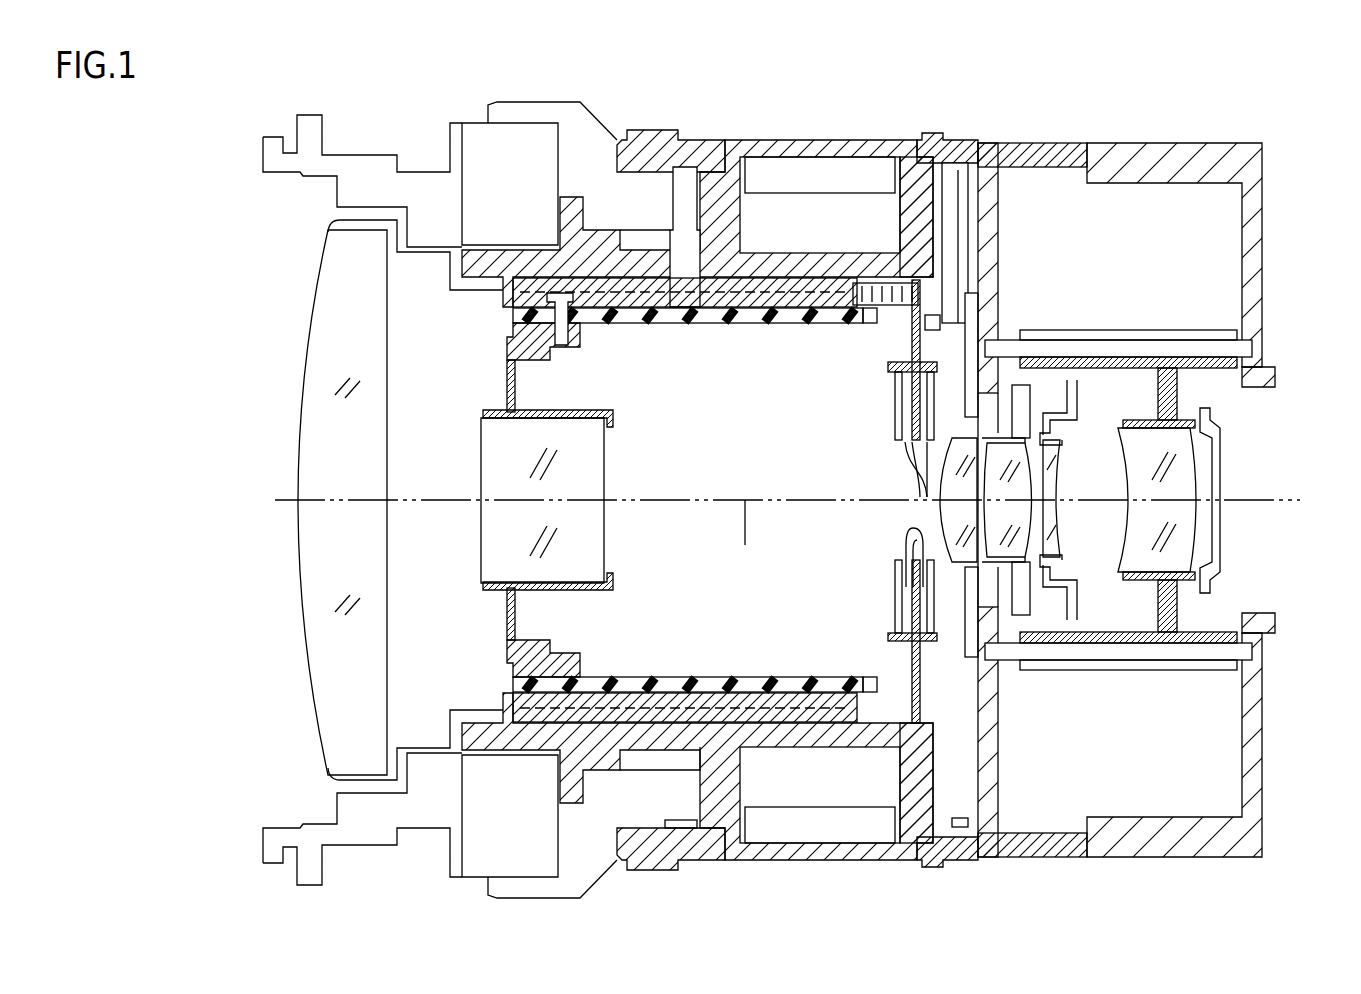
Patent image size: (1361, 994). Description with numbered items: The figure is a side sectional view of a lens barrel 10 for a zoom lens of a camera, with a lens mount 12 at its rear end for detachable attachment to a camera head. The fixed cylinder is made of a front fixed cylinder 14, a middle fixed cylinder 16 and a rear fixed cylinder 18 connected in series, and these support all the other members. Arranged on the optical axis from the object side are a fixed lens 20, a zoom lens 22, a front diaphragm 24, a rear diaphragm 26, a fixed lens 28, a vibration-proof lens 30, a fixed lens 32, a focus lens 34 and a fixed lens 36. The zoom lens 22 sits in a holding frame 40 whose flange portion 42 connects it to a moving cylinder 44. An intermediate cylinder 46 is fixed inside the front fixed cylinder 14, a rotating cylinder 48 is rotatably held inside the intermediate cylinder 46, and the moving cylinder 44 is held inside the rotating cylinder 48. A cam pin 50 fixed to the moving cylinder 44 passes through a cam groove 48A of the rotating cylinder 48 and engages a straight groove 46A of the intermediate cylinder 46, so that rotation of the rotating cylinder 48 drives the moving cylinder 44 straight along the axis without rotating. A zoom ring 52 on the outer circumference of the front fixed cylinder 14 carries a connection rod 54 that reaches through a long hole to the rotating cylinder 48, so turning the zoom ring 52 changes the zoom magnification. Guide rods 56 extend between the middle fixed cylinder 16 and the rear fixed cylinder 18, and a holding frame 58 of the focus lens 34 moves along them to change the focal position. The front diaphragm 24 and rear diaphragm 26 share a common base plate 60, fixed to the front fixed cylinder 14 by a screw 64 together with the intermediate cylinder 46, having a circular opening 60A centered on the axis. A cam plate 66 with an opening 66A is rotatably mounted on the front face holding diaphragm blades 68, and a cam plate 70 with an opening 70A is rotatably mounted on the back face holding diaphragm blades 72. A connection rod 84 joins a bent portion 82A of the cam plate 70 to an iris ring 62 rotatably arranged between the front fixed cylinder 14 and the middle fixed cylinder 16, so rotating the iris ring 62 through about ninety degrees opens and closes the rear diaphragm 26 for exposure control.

The lens barrel 10 is at (246, 78).
The lens mount 12 is at (1268, 374).
The front fixed cylinder 14 is at (776, 146).
The middle fixed cylinder 16 is at (1016, 150).
The rear fixed cylinder 18 is at (1186, 160).
The fixed lens 20 is at (322, 350).
The zoom lens 22 is at (490, 443).
The front diaphragm 24 is at (895, 448).
The rear diaphragm 26 is at (915, 475).
The fixed lens 28 is at (910, 515).
The vibration-proof lens 30 is at (1015, 548).
The fixed lens 32 is at (1055, 521).
The focus lens 34 is at (1186, 480).
The fixed lens 36 is at (1222, 532).
The holding frame 40 is at (578, 406).
The flange portion 42 is at (517, 378).
The moving cylinder 44 is at (513, 327).
The intermediate cylinder 46 is at (756, 292).
The straight groove 46A is at (664, 322).
The rotating cylinder 48 is at (708, 322).
The cam groove 48A is at (583, 323).
The cam pin 50 is at (563, 305).
The zoom ring 52 is at (656, 134).
The connection rod 54 is at (716, 153).
The guide rods 56 is at (1117, 343).
The holding frame 58 is at (1180, 400).
The base plate 60 is at (905, 355).
The opening 60A is at (895, 585).
The iris ring 62 is at (945, 133).
The screw 64 is at (933, 277).
The cam plate 66 is at (905, 390).
The opening 66A is at (900, 630).
The diaphragm blades 68 is at (907, 461).
The cam plate 70 is at (903, 420).
The opening 70A is at (950, 495).
The diaphragm blades 72 is at (898, 545).
The bent portion 82A is at (970, 303).
The connection rod 84 is at (960, 228).